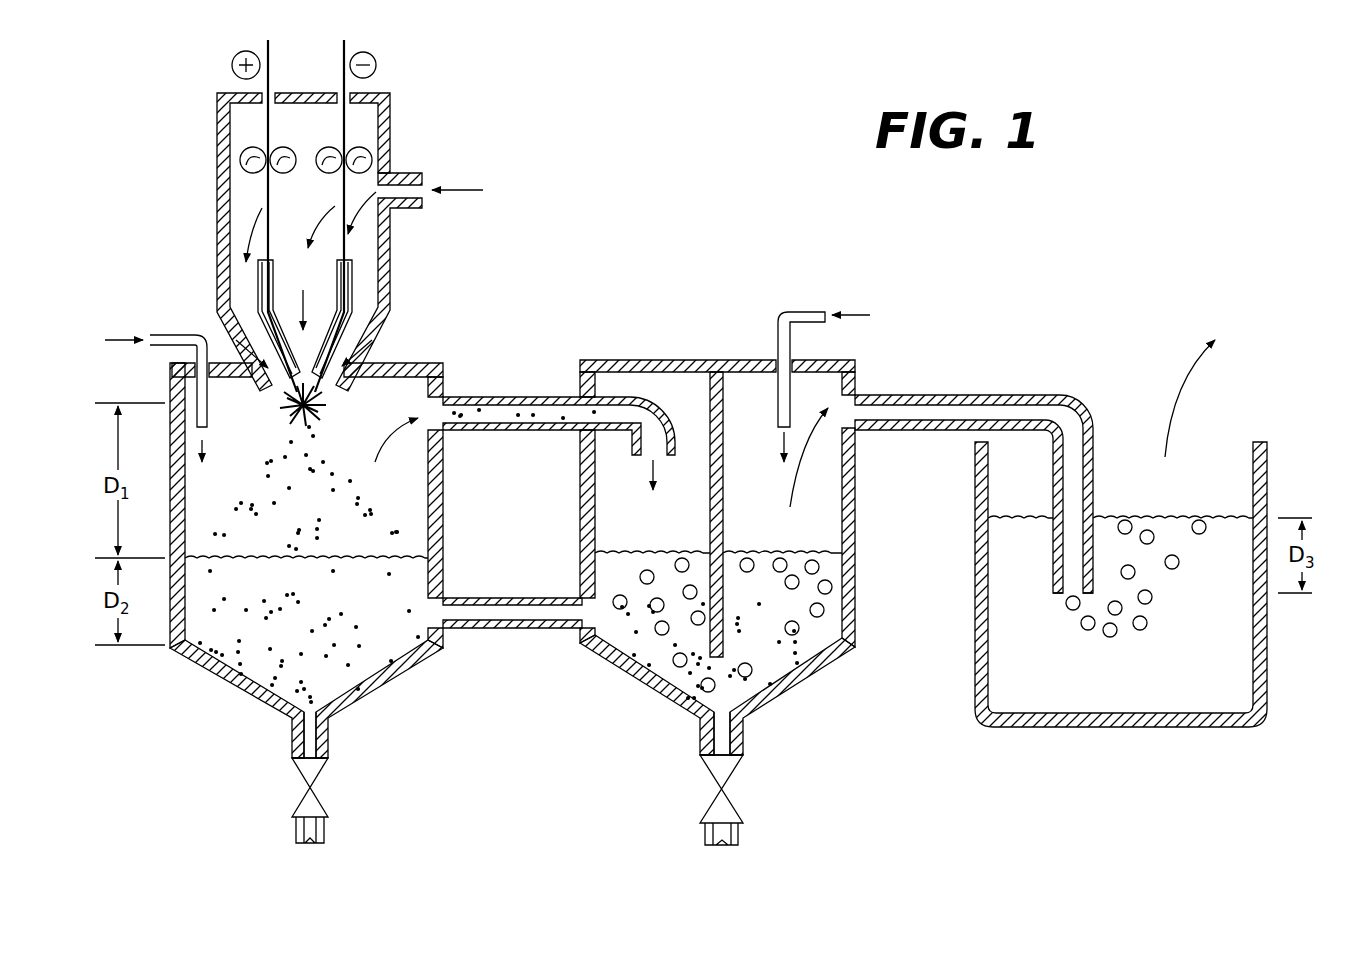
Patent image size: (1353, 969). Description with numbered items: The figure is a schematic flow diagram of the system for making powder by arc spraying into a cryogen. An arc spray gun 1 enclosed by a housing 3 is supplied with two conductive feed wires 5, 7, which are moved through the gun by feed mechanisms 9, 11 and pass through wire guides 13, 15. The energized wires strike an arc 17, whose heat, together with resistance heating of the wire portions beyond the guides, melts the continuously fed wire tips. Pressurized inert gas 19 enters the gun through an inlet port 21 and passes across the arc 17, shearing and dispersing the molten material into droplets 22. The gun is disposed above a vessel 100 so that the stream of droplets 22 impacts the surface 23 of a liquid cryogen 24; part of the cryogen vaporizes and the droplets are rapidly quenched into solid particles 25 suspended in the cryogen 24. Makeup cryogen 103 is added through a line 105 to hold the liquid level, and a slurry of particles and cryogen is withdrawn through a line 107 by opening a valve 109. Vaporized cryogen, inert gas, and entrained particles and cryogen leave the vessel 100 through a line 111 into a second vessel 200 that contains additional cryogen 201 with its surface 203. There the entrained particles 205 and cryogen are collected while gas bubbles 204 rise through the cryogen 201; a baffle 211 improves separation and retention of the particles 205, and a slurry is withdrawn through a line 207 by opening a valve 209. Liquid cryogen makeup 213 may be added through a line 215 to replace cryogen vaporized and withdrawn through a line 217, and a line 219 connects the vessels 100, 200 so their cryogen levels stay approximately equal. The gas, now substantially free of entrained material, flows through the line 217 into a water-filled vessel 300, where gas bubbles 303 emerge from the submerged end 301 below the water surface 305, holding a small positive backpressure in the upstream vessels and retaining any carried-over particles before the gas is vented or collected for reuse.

The arc spray gun 1 is at (310, 213).
The housing 3 is at (325, 242).
The conductive feed wire 5 is at (272, 72).
The conductive feed wire 7 is at (341, 72).
The feed mechanism 9 is at (276, 147).
The feed mechanism 11 is at (335, 147).
The wire guide 13 is at (258, 322).
The wire guide 15 is at (355, 328).
The arc 17 is at (278, 415).
The pressurized inert gas 19 is at (462, 180).
The gas inlet port 21 is at (400, 178).
The droplets 22 is at (383, 508).
The surface 23 is at (415, 553).
The liquid cryogen 24 is at (426, 660).
The solid particles 25 is at (372, 664).
The vessel 100 is at (299, 568).
The makeup cryogen 103 is at (121, 338).
The line 105 is at (182, 350).
The line 107 is at (330, 742).
The valve 109 is at (322, 806).
The line 111 is at (516, 396).
The vessel 200 is at (729, 564).
The cryogen 201 is at (836, 622).
The liquid surface 203 is at (658, 550).
The gas bubbles 204 is at (820, 569).
The entrained particles 205 is at (618, 652).
The line 207 is at (745, 742).
The valve 209 is at (735, 806).
The baffle 211 is at (727, 626).
The liquid cryogen makeup 213 is at (857, 305).
The line 215 is at (777, 322).
The line 217 is at (918, 395).
The line 219 is at (524, 590).
The water-filled vessel 300 is at (1077, 533).
The end 301 is at (1047, 593).
The gas bubbles 303 is at (1150, 602).
The water surface 305 is at (1186, 517).